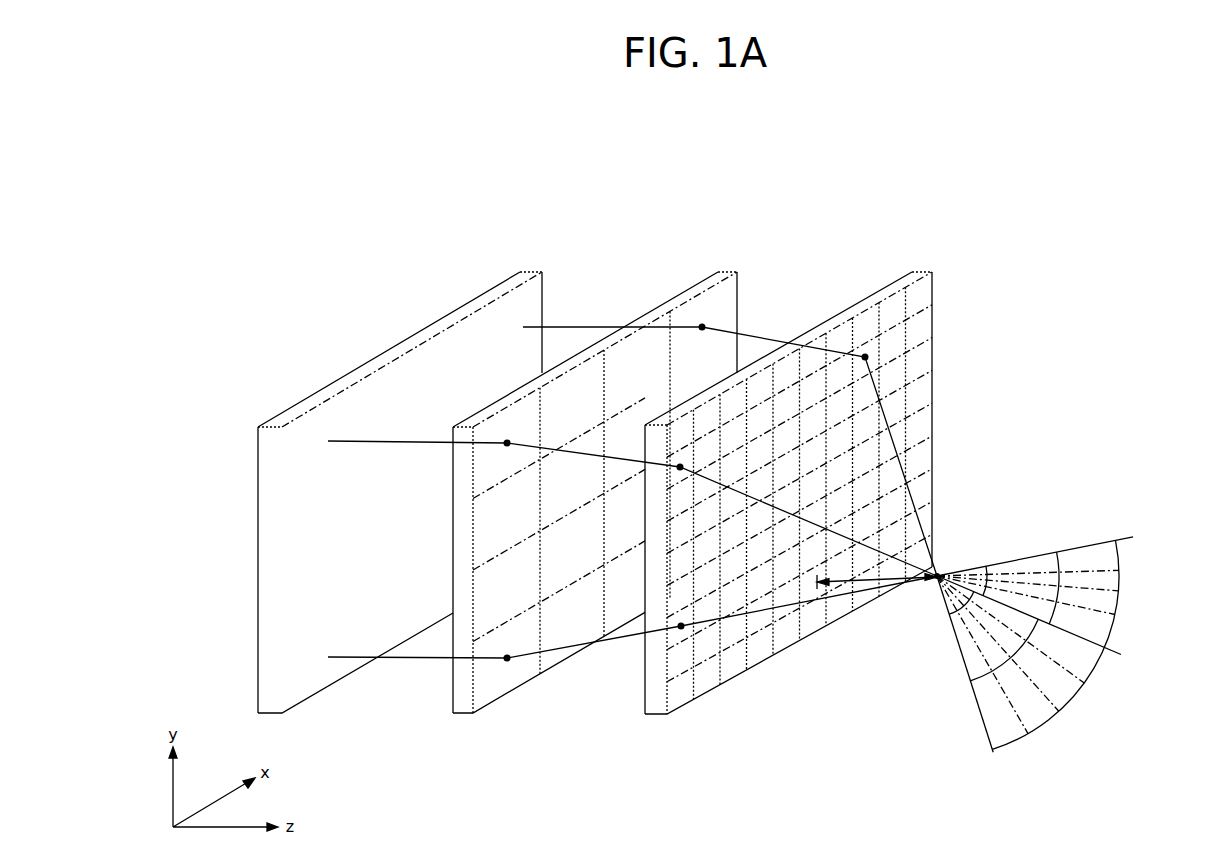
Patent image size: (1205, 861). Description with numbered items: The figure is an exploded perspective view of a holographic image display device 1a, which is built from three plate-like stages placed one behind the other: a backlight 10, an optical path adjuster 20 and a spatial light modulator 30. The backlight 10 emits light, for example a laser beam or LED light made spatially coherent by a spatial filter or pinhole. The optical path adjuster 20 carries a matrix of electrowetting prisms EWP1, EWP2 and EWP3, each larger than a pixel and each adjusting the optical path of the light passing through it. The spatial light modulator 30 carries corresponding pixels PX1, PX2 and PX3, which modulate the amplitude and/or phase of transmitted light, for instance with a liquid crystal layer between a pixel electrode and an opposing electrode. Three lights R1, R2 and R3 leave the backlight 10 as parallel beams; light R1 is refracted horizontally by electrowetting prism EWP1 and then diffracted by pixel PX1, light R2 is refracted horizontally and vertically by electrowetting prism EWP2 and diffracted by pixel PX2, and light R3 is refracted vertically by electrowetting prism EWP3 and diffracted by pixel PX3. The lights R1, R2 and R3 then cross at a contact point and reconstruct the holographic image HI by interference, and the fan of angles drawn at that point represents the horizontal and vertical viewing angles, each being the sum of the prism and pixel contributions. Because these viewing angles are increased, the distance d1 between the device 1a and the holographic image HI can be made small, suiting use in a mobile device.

The holographic image display device 1a is at (654, 158).
The backlight 10 is at (522, 271).
The optical path adjuster 20 is at (720, 270).
The spatial light modulator (SLM) 30 is at (915, 271).
The light R1 is at (580, 326).
The light R2 is at (368, 442).
The light R3 is at (402, 659).
The electrowetting prism EWP1 is at (722, 306).
The electrowetting prism EWP2 is at (508, 430).
The electrowetting prism EWP3 is at (505, 672).
The pixel PX1 is at (876, 344).
The pixel PX2 is at (697, 456).
The pixel PX3 is at (692, 642).
The holographic image HI is at (943, 572).
The distance d1 is at (877, 572).